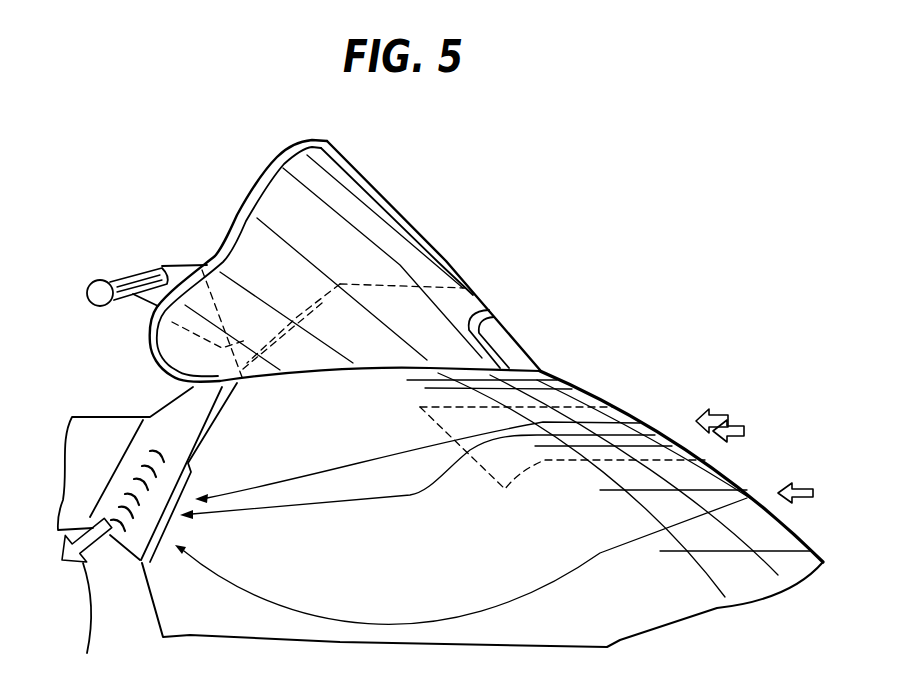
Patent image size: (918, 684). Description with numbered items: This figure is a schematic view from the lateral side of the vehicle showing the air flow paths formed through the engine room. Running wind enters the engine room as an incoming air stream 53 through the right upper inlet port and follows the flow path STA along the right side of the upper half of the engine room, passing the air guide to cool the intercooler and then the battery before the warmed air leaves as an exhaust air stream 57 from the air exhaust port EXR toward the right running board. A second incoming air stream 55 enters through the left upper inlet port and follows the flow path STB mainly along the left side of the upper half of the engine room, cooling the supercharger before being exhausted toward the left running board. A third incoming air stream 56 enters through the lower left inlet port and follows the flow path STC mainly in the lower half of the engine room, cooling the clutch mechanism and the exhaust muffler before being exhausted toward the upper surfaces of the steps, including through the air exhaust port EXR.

The incoming air stream 53 is at (746, 440).
The incoming air stream 55 is at (725, 416).
The incoming air stream 56 is at (794, 488).
The exhaust air stream 57 is at (66, 561).
The air exhaust port EXR is at (157, 453).
The flow path STA is at (417, 495).
The flow path STB is at (362, 466).
The flow path STC is at (513, 594).